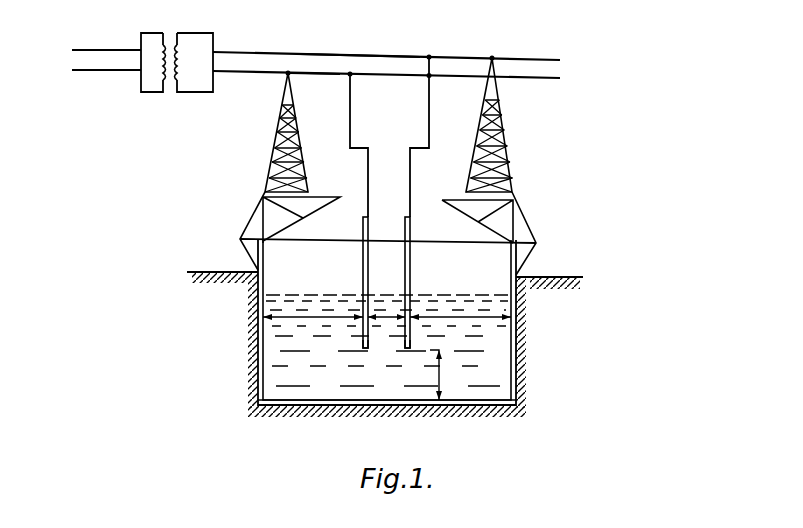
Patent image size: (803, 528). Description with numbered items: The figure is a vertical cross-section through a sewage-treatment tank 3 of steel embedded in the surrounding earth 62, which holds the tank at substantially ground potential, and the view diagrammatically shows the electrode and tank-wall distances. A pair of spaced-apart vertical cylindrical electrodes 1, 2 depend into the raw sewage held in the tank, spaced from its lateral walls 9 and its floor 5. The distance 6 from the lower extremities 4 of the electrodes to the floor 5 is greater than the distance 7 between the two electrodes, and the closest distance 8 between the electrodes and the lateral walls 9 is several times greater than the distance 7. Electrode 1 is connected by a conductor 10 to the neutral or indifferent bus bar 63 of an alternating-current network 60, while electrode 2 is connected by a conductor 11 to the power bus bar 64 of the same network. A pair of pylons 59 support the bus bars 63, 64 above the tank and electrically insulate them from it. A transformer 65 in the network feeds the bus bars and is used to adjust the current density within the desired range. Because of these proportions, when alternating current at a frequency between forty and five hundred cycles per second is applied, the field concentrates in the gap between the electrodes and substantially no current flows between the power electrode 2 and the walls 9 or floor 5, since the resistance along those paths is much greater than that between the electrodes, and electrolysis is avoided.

The electrode 1 is at (362, 272).
The electrode 2 is at (411, 273).
The treatment tank 3 is at (495, 402).
The lower extremities of the electrodes 4 is at (365, 350).
The floor of the tank 5 is at (387, 419).
The distance of the lower extremities from the floor 6 is at (443, 378).
The distance between the two electrodes 7 is at (392, 325).
The closest distance of the electrodes from the lateral walls 8 is at (315, 322).
The lateral walls of the tank 9 is at (246, 371).
The conductor 10 is at (370, 187).
The conductor 11 is at (413, 187).
The pylons 59 is at (273, 153).
The alternating-current network 60 is at (231, 71).
The surrounding earth 62 is at (242, 282).
The neutral or indifferent bus bar 63 is at (324, 75).
The power bus bar 64 is at (340, 54).
The transformer 65 is at (167, 97).